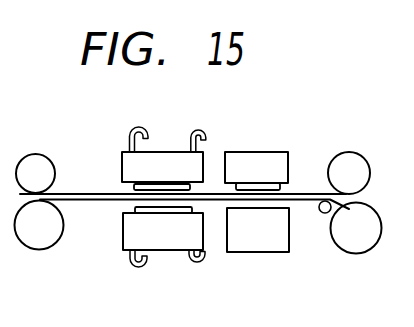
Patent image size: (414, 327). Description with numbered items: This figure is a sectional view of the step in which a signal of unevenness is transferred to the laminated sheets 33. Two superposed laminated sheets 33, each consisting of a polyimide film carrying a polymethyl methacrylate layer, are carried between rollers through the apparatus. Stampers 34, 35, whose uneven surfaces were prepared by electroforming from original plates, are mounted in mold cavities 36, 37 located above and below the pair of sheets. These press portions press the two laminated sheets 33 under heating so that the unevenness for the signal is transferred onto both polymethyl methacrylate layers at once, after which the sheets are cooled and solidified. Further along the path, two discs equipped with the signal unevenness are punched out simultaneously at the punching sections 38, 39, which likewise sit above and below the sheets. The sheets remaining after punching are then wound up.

The laminated sheet 33 is at (70, 193).
The stamper 34 is at (134, 188).
The stamper 35 is at (135, 210).
The mold cavity 36 is at (166, 163).
The mold cavity 37 is at (166, 240).
The punching section 38 is at (254, 238).
The punching section 39 is at (261, 160).